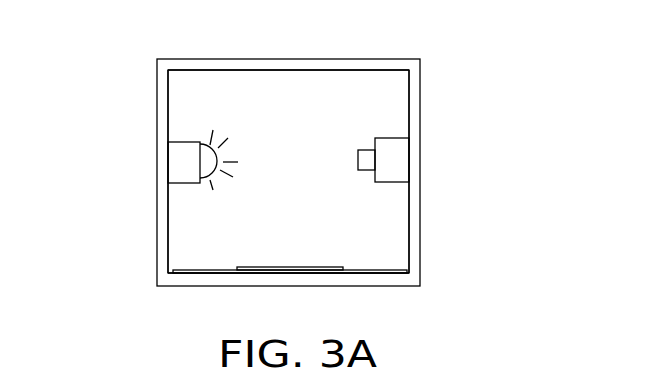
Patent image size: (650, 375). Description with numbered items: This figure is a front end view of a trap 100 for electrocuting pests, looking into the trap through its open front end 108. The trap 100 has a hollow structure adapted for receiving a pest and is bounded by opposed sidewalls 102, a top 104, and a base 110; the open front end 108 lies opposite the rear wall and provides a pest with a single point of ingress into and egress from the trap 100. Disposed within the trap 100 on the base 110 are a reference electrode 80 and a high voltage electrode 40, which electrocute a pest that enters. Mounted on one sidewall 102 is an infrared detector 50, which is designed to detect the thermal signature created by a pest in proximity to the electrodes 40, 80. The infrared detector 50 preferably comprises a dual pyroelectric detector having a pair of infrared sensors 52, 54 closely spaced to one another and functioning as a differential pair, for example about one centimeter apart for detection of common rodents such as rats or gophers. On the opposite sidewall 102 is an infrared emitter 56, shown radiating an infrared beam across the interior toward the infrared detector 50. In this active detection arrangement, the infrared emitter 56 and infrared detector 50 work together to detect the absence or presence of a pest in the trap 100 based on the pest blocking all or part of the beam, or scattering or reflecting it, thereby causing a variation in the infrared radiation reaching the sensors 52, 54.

The trap 100 is at (455, 53).
The sidewalls 102 is at (163, 110).
The top 104 is at (262, 59).
The open front end 108 is at (195, 218).
The base 110 is at (397, 287).
The infrared emitter 56 is at (176, 165).
The infrared detector 50 is at (395, 163).
The infrared sensor 52 is at (332, 136).
The infrared sensor 54 is at (358, 157).
The reference electrode 80 is at (380, 271).
The high voltage electrode 40 is at (290, 266).